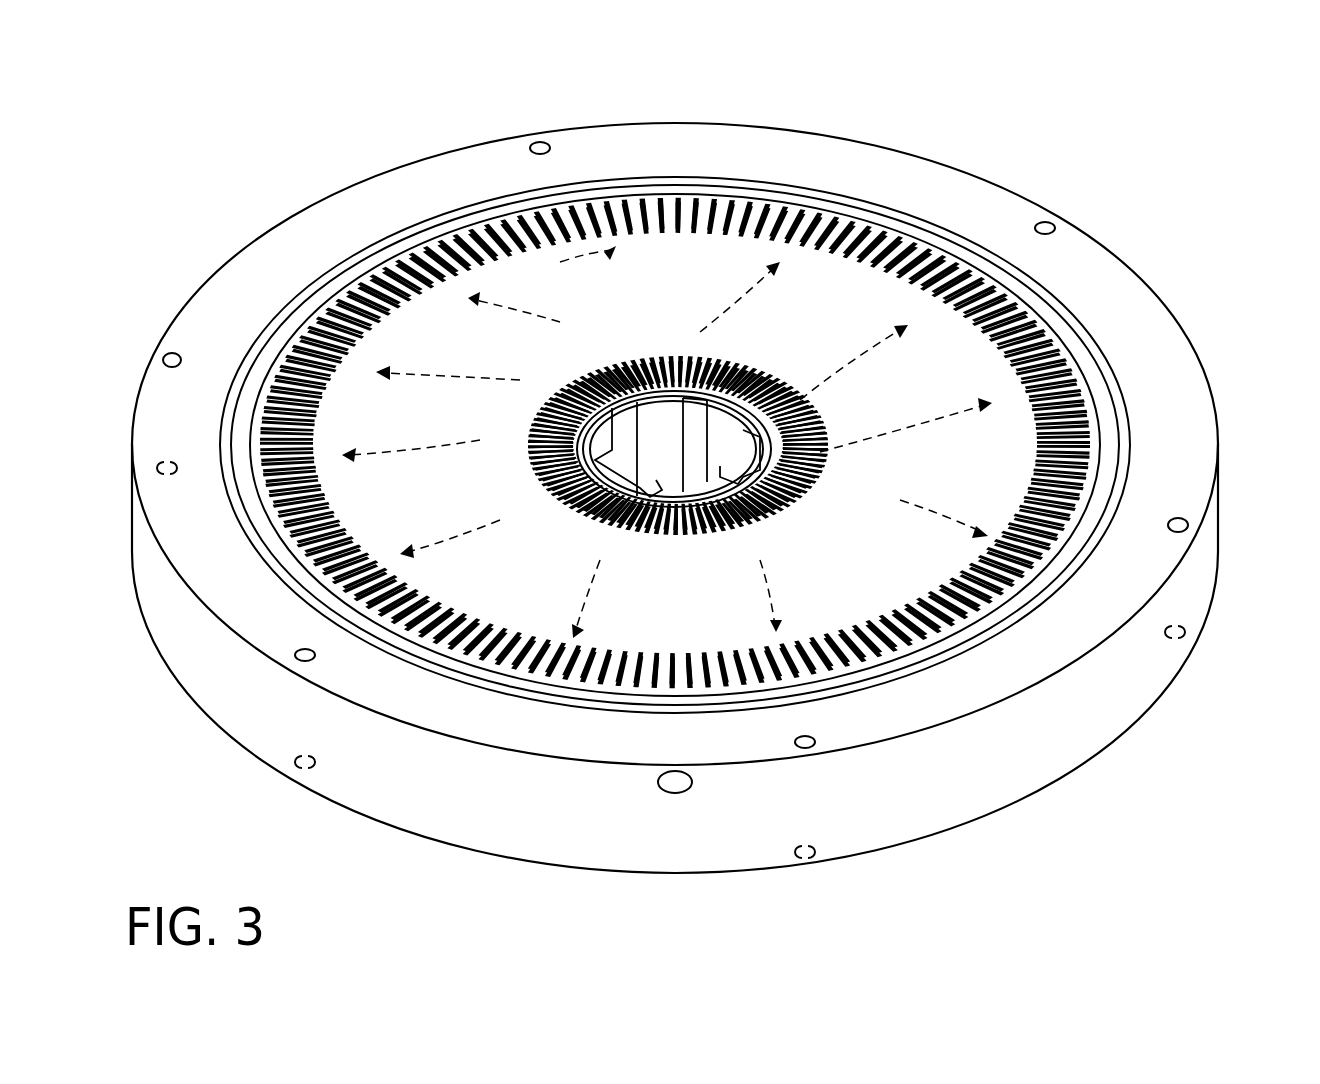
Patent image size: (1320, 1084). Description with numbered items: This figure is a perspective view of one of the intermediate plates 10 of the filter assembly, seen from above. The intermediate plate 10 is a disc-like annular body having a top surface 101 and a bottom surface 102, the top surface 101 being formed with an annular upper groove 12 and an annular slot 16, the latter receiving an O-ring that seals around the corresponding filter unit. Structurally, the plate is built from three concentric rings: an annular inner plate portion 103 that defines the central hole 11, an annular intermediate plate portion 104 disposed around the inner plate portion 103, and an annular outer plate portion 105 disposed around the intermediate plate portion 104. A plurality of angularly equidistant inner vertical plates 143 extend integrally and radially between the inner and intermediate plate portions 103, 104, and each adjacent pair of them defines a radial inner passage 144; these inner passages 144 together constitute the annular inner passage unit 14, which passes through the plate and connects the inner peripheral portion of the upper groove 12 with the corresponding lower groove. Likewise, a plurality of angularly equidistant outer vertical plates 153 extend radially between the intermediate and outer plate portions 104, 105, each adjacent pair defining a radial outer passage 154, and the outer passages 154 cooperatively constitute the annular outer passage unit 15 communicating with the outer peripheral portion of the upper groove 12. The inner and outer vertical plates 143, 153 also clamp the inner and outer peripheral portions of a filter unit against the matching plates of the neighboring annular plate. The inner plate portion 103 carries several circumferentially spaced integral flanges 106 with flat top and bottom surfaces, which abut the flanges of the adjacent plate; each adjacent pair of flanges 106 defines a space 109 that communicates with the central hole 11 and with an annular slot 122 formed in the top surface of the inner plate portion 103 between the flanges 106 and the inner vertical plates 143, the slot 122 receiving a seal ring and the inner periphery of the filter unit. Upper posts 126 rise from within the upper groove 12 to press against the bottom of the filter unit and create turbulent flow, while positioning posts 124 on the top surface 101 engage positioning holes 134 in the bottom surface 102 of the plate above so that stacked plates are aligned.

The intermediate plate 10 is at (1141, 262).
The central hole 11 is at (662, 420).
The annular upper groove 12 is at (818, 278).
The annular inner passage unit 14 is at (550, 495).
The annular outer passage unit 15 is at (876, 655).
The annular slot 16 is at (1110, 376).
The top surface 101 is at (1157, 430).
The bottom surface 102 is at (1003, 818).
The annular inner plate portion 103 is at (737, 397).
The annular intermediate plate portion 104 is at (870, 322).
The annular outer plate portion 105 is at (1003, 222).
The flange 106 is at (647, 440).
The space 109 is at (694, 408).
The annular slot 122 is at (583, 390).
The positioning post 124 is at (1185, 534).
The upper post 126 is at (542, 272).
The positioning hole 134 is at (1170, 645).
The inner vertical plate 143 is at (668, 530).
The radial inner passage 144 is at (672, 537).
The outer vertical plate 153 is at (542, 650).
The radial outer passage 154 is at (512, 647).